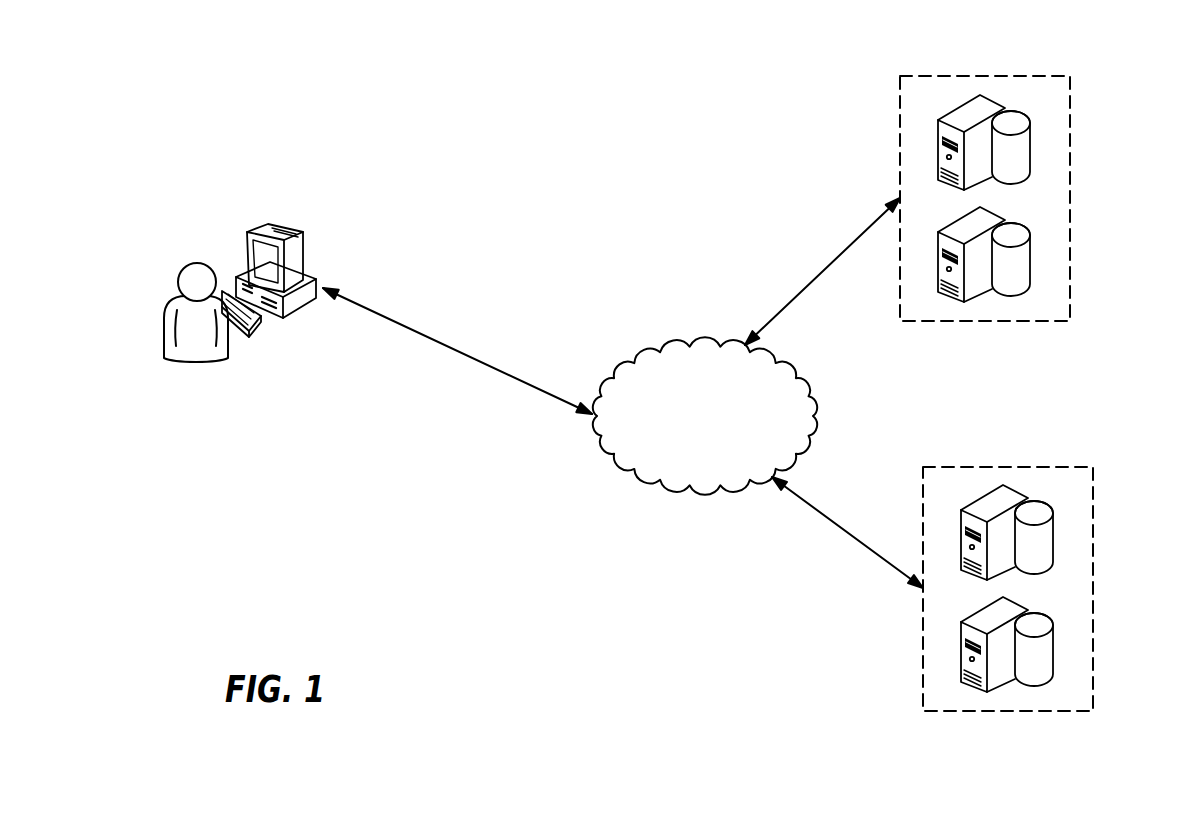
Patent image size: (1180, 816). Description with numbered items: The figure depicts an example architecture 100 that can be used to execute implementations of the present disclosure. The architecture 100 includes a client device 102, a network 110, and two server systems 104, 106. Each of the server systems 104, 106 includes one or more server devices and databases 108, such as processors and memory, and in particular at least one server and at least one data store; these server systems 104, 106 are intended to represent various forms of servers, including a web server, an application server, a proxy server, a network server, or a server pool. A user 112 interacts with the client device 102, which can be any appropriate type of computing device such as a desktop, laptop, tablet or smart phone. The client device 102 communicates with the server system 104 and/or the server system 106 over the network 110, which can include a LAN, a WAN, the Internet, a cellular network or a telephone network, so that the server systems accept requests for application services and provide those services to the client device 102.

The example architecture 100 is at (552, 100).
The client device 102 is at (247, 239).
The server system 104 is at (1070, 199).
The server system 106 is at (1093, 590).
The server devices and databases 108 is at (938, 140).
The network 110 is at (699, 341).
The user 112 is at (197, 358).